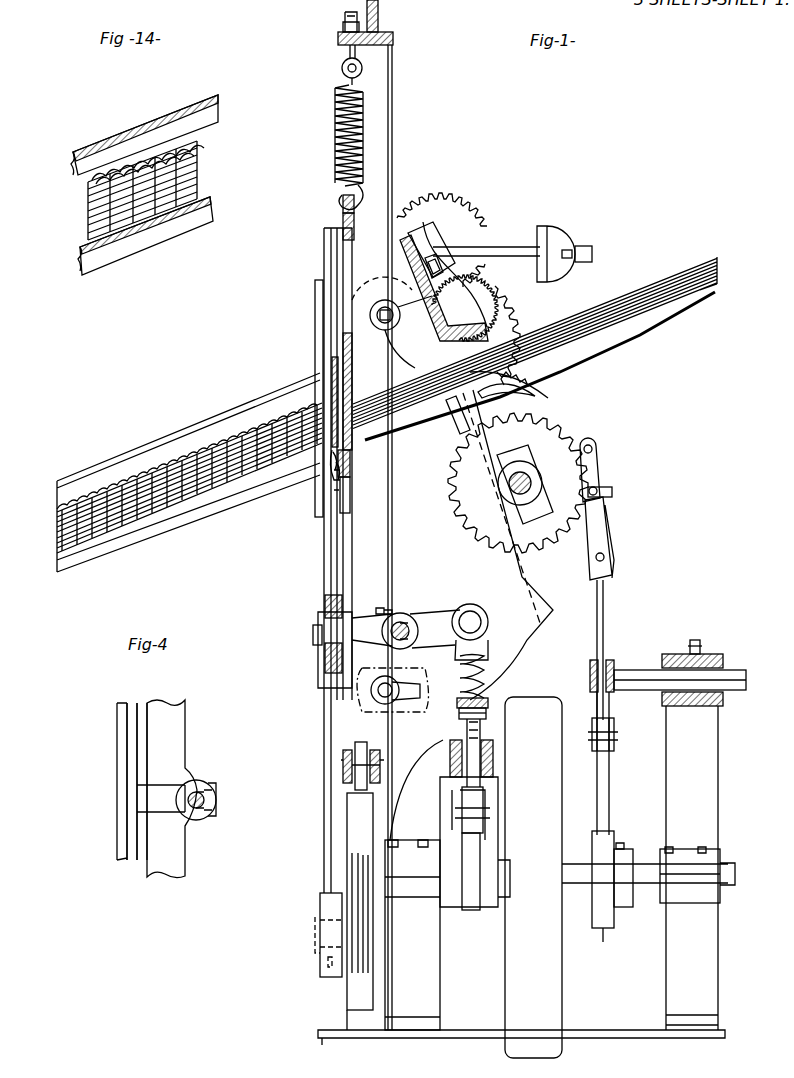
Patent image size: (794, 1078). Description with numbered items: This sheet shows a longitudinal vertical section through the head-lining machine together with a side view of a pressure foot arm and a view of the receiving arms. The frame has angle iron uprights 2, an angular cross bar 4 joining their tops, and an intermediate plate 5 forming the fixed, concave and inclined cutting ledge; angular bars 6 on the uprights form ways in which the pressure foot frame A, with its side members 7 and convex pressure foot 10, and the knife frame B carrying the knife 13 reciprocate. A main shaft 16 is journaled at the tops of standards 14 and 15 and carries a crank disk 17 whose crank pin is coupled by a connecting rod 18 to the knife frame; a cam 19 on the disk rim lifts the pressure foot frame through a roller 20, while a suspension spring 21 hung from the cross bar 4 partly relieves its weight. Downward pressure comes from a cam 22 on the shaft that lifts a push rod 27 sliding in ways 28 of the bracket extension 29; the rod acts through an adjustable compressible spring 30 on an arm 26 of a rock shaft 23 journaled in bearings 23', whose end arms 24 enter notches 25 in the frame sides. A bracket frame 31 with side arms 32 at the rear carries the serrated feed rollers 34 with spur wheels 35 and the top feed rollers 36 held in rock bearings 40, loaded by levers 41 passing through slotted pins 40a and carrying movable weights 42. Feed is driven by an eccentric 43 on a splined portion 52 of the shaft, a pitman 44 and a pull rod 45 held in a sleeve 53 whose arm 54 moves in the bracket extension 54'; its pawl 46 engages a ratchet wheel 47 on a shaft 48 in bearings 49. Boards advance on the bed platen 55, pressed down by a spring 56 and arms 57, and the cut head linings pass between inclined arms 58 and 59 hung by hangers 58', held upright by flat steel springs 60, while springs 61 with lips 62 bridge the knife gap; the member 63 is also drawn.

In FIG. 4, the angle iron uprights 2 is at (170, 753).
In FIG. 1, the angle iron uprights 2 is at (394, 78).
In FIG. 1, the angular cross bar 4 is at (378, 25).
In FIG. 1, the intermediate plate 5 is at (372, 456).
In FIG. 4, the angular bars 6 is at (117, 741).
In FIG. 1, the angular bars 6 is at (323, 253).
In FIG. 1, the side members 7 is at (313, 1038).
In FIG. 1, the pressure foot 10 is at (353, 372).
In FIG. 1, the knife 13 is at (334, 372).
In FIG. 1, the standard 14 is at (425, 893).
In FIG. 1, the standard 15 is at (698, 897).
In FIG. 1, the main shaft 16 is at (740, 882).
In FIG. 1, the crank disk 17 is at (357, 831).
In FIG. 1, the connecting rod 18 is at (331, 783).
In FIG. 1, the cam 19 is at (357, 973).
In FIG. 1, the roller 20 is at (367, 742).
In FIG. 1, the suspension spring 21 is at (338, 122).
In FIG. 1, the cam 22 is at (472, 910).
In FIG. 4, the rock shaft 23 is at (206, 782).
In FIG. 1, the rock shaft 23 is at (407, 606).
In FIG. 4, the bearings 23' is at (233, 792).
In FIG. 1, the bearings 23' is at (420, 595).
In FIG. 4, the arms 24 is at (162, 800).
In FIG. 1, the arms 24 is at (390, 636).
In FIG. 1, the notch 25 is at (357, 620).
In FIG. 1, the arm 26 is at (449, 632).
In FIG. 1, the push rod 27 is at (482, 740).
In FIG. 1, the ways 28 is at (450, 760).
In FIG. 1, the bracket extension 29 is at (450, 823).
In FIG. 1, the adjustable compressible spring 30 is at (490, 678).
In FIG. 1, the bracket frame 31 is at (542, 405).
In FIG. 1, the side arms 32 is at (452, 488).
In FIG. 1, the serrated feed roller 34 is at (532, 389).
In FIG. 1, the spur wheel 35 is at (507, 298).
In FIG. 1, the top feed roller 36 is at (465, 308).
In FIG. 1, the rock bearing 40 is at (438, 234).
In FIG. 1, the slotted pin 40a is at (428, 220).
In FIG. 1, the lever 41 is at (592, 257).
In FIG. 1, the movable weight 42 is at (557, 234).
In FIG. 1, the eccentric 43 is at (607, 928).
In FIG. 1, the pitman 44 is at (605, 789).
In FIG. 1, the pull rod 45 is at (613, 616).
In FIG. 1, the pawl 46 is at (600, 476).
In FIG. 1, the ratchet wheel 47 is at (557, 441).
In FIG. 1, the shaft 48 is at (533, 482).
In FIG. 1, the bearings 49 is at (516, 446).
In FIG. 1, the splined portion 52 is at (650, 884).
In FIG. 1, the sleeve 53 is at (590, 676).
In FIG. 1, the arm 54 is at (696, 680).
In FIG. 1, the bracket extension 54' is at (709, 835).
In FIG. 1, the bed platen 55 is at (693, 307).
In FIG. 1, the spring 56 is at (517, 334).
In FIG. 1, the arms 57 is at (452, 408).
In FIG. 14, the inclined arm 58 is at (145, 208).
In FIG. 1, the inclined arm 58 is at (190, 478).
In FIG. 1, the hangers 58' is at (295, 398).
In FIG. 14, the inclined arm 59 is at (203, 100).
In FIG. 1, the inclined arm 59 is at (146, 468).
In FIG. 14, the flat steel springs 60 is at (213, 132).
In FIG. 1, the flat steel springs 60 is at (50, 524).
In FIG. 1, the springs 61 is at (333, 472).
In FIG. 1, the lip 62 is at (330, 458).
In FIG. 1, the flywheel 63 is at (533, 877).
In FIG. 4, the pressure foot frame A is at (144, 703).
In FIG. 1, the pressure foot frame A is at (325, 233).
In FIG. 4, the knife frame B is at (128, 703).
In FIG. 1, the knife frame B is at (337, 227).